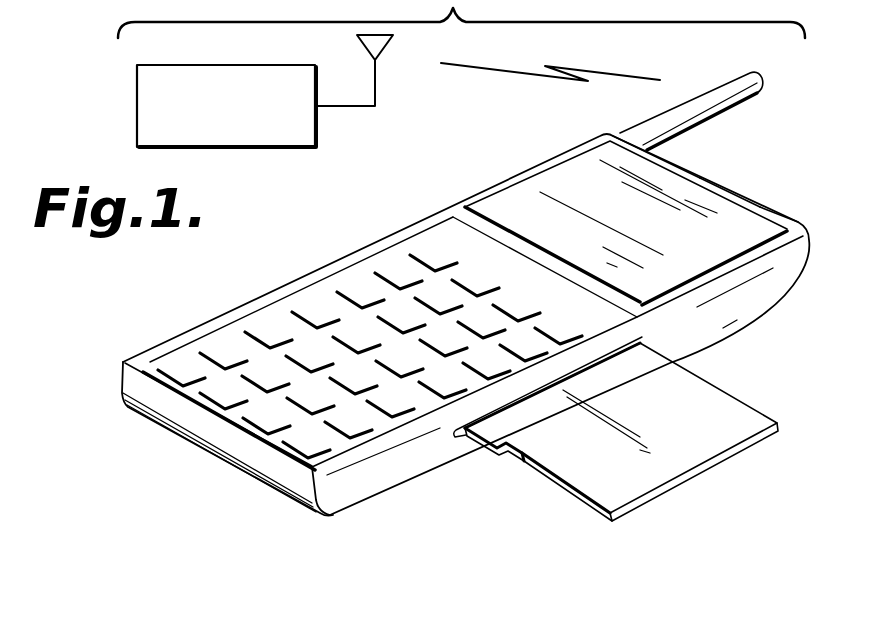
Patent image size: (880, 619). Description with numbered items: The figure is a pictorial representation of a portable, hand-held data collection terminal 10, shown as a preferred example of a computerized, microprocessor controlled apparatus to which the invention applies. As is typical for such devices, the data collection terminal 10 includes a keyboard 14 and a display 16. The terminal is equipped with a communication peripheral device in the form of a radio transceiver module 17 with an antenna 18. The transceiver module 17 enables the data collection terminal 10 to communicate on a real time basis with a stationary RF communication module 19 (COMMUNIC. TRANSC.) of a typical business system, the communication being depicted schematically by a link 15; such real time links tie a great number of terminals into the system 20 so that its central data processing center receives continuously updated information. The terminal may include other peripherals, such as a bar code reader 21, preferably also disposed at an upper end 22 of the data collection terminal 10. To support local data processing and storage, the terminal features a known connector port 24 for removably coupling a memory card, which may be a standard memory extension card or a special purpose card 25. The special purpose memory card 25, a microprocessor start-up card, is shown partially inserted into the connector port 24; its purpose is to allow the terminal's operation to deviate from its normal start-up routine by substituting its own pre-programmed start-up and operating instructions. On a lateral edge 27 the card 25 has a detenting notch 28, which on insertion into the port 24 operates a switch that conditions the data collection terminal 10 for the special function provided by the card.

The data collection terminal 10 is at (312, 260).
The keyboard 14 is at (266, 330).
The link 15 is at (533, 78).
The display 16 is at (536, 184).
The radio transceiver module 17 is at (686, 170).
The antenna 18 is at (721, 88).
The stationary RF communication module 19 is at (316, 142).
The system 20 is at (573, 24).
The bar code reader 21 is at (727, 188).
The upper end 22 is at (762, 205).
The connector port 24 is at (593, 366).
The special purpose memory card 25 is at (727, 405).
The lateral edge 27 is at (577, 497).
The detenting notch 28 is at (508, 452).